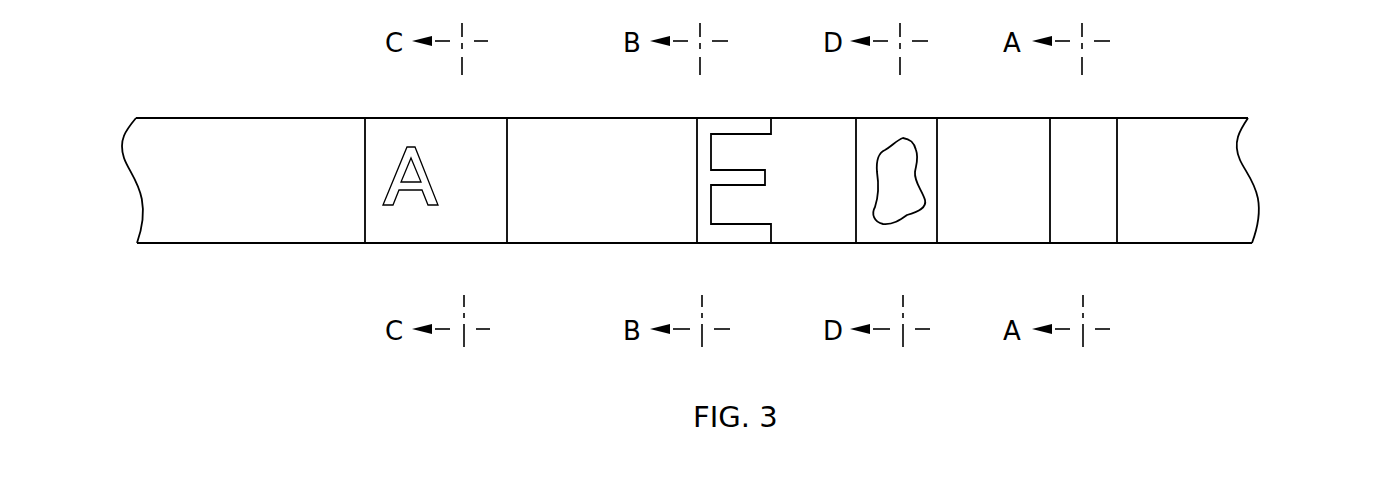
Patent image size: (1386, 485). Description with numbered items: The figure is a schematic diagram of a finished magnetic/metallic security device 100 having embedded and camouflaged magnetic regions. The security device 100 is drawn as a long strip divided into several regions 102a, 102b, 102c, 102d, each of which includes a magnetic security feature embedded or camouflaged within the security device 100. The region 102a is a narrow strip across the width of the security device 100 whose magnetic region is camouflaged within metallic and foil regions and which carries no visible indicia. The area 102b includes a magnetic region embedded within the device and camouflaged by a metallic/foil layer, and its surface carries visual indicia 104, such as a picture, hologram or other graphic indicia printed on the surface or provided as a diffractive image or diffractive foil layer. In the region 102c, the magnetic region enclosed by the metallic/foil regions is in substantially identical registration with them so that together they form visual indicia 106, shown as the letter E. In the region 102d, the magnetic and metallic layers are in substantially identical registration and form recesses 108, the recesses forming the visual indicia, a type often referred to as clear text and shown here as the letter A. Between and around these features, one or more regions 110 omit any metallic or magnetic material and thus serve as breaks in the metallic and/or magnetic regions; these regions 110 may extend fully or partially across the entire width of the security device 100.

The magnetic/metallic security device 100 is at (1276, 162).
The region 102a is at (1097, 243).
The area 102b is at (936, 191).
The region 102c is at (756, 173).
The region 102d is at (439, 191).
The visual indicia 104 is at (908, 139).
The visual indicia 106 is at (738, 118).
The recesses 108 is at (411, 147).
The regions 110 is at (274, 189).